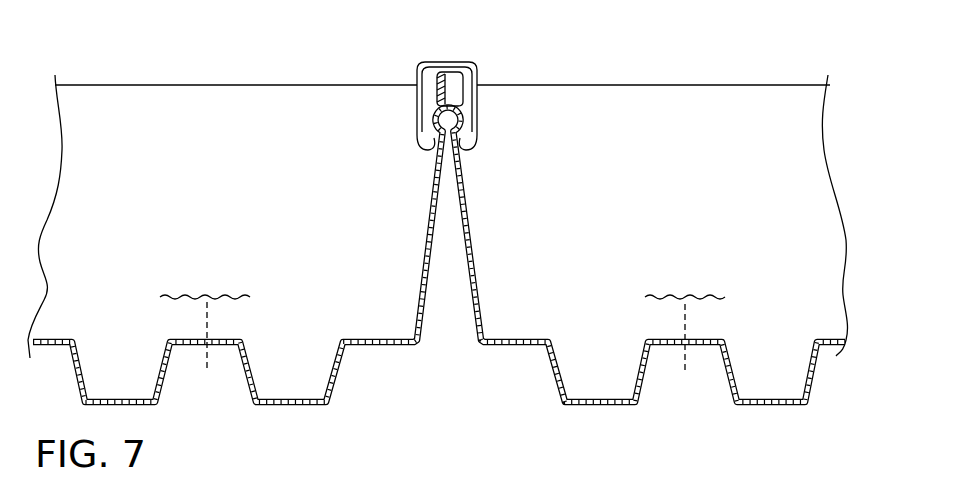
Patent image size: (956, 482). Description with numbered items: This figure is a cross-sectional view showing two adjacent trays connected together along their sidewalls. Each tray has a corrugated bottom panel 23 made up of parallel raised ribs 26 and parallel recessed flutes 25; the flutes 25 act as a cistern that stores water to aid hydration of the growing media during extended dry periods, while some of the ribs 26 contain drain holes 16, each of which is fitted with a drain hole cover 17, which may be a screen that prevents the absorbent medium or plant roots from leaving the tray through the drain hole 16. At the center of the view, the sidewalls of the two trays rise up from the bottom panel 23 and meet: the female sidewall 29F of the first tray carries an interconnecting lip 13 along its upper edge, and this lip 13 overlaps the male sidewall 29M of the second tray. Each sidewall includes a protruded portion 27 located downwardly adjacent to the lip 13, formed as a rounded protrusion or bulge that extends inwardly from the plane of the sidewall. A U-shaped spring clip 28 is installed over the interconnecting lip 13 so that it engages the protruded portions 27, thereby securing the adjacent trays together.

The lip 13 is at (449, 96).
The U-shaped spring clip 28 is at (477, 103).
The protruded portion 27 is at (418, 130).
The female sidewall 29F is at (427, 227).
The male sidewall 29M is at (466, 212).
The drain hole cover 17 is at (190, 295).
The drain hole 16 is at (214, 348).
The recessed flute 25 is at (124, 399).
The raised rib 26 is at (58, 340).
The corrugated bottom panel 23 is at (346, 402).